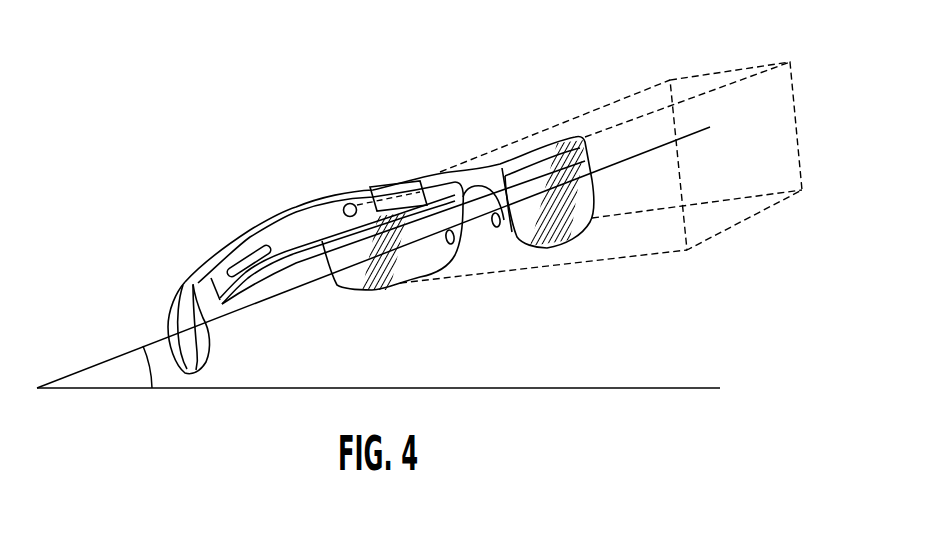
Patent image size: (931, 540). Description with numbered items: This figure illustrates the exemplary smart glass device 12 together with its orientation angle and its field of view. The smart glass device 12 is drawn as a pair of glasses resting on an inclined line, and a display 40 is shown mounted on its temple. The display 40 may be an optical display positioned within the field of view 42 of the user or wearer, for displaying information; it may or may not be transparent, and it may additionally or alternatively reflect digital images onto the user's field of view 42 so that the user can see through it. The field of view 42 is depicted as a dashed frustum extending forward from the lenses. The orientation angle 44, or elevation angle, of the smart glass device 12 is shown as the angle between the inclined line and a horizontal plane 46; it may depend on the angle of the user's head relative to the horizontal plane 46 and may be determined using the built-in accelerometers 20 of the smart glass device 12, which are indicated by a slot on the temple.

The smart glass device 12 is at (307, 202).
The built-in accelerometers 20 is at (247, 260).
The display 40 is at (397, 206).
The field of view 42 is at (712, 76).
The orientation angle 44 is at (142, 350).
The horizontal plane 46 is at (494, 391).